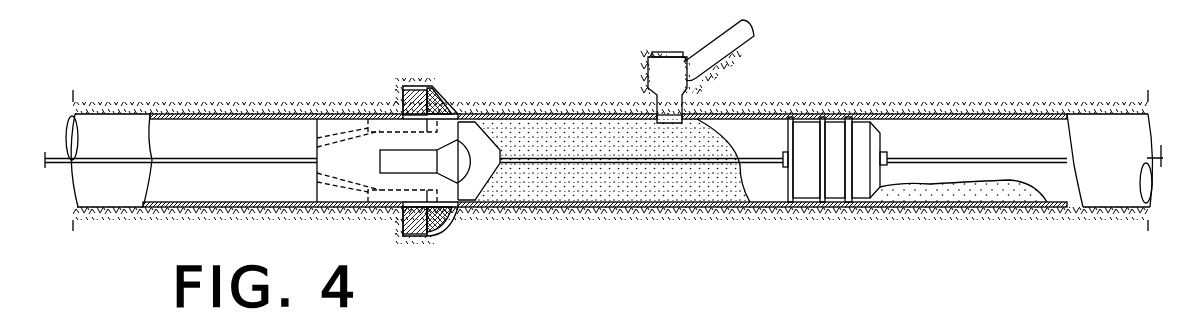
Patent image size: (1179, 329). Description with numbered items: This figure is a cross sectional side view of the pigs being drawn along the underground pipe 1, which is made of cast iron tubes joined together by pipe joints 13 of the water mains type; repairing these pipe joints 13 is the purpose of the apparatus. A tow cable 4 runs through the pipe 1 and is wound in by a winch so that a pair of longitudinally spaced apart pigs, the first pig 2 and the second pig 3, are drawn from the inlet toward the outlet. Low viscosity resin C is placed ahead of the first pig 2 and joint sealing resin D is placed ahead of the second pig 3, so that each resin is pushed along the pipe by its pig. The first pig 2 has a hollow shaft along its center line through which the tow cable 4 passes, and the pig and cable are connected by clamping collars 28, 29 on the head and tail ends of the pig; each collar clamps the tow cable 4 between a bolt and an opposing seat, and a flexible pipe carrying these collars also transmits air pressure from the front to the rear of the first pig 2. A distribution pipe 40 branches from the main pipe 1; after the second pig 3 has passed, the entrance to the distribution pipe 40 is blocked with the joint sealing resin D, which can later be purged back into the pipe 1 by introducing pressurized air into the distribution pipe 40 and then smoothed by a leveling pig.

The underground pipe 1 is at (247, 114).
The first pig 2 is at (807, 185).
The second pig 3 is at (476, 190).
The tow cable 4 is at (233, 158).
The pipe joint 13 is at (432, 80).
The clamping collar 28 is at (886, 156).
The clamping collar 29 is at (783, 168).
The distribution pipe 40 is at (723, 50).
The low viscosity resin C is at (943, 193).
The joint sealing resin D is at (608, 190).